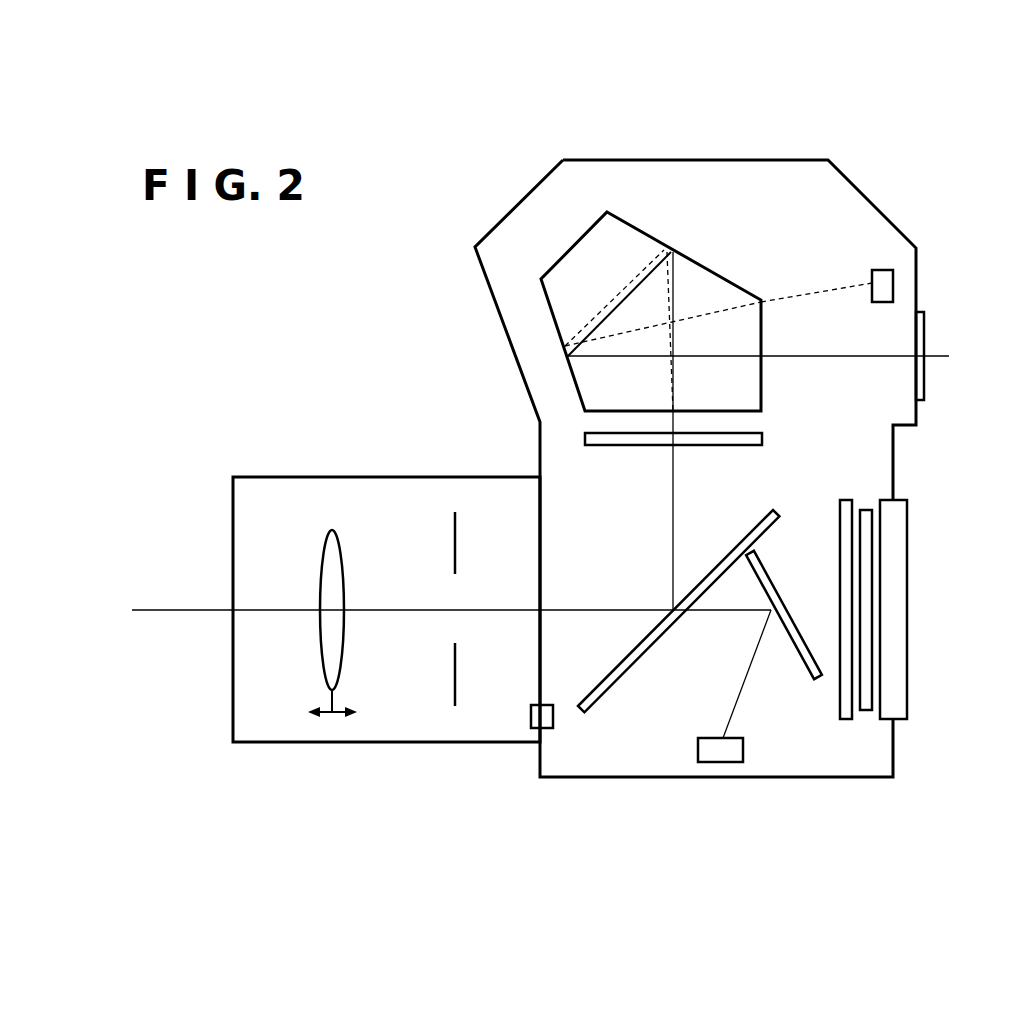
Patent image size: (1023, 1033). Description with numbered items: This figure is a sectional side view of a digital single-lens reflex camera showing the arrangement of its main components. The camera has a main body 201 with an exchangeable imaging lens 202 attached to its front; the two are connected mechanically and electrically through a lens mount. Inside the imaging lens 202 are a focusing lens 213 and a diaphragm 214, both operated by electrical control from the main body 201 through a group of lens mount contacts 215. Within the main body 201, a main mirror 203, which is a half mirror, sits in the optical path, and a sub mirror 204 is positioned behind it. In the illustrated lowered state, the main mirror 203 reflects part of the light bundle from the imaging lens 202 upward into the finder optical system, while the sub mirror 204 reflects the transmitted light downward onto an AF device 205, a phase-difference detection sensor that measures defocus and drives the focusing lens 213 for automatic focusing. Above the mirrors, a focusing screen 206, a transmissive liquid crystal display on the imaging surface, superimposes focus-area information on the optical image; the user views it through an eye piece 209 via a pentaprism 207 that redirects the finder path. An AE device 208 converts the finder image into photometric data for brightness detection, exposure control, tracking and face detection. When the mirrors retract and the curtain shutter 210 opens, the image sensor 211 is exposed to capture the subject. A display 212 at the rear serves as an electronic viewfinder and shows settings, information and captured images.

The main body 201 is at (583, 158).
The imaging lens 202 is at (343, 477).
The main mirror 203 is at (600, 702).
The sub mirror 204 is at (777, 598).
The AF device 205 is at (722, 762).
The focusing screen 206 is at (640, 445).
The pentaprism 207 is at (645, 233).
The AE device 208 is at (882, 270).
The eye piece 209 is at (928, 320).
The curtain shutter 210 is at (845, 720).
The image sensor 211 is at (866, 710).
The display 212 is at (898, 719).
The focusing lens 213 is at (356, 528).
The diaphragm 214 is at (455, 706).
The group of lens mount contacts 215 is at (535, 730).